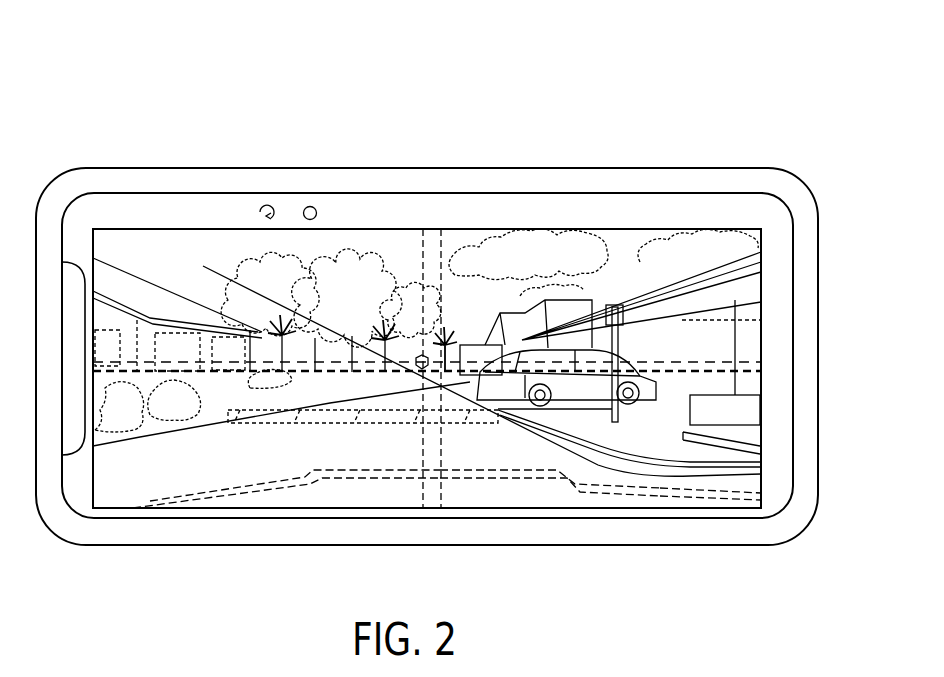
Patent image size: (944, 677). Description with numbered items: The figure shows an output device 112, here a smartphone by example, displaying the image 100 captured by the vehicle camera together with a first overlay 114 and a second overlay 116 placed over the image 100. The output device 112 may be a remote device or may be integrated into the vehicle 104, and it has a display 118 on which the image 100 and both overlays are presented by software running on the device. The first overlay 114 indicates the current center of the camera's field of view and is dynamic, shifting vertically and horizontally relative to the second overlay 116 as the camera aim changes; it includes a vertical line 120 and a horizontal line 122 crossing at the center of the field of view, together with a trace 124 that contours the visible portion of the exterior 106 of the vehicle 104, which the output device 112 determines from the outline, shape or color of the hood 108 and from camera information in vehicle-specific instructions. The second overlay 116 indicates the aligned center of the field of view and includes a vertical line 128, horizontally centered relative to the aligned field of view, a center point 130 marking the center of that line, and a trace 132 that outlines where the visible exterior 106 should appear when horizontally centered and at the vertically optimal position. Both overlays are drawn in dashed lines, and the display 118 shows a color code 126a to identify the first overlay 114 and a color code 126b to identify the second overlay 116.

The image 100 is at (535, 229).
The vehicle 104 is at (600, 505).
The exterior of the vehicle 106 is at (657, 505).
The hood 108 is at (535, 500).
The output device 112 is at (240, 168).
The first overlay 114 is at (441, 248).
The second overlay 116 is at (420, 250).
The display 118 is at (748, 193).
The vertical line 120 is at (445, 275).
The horizontal line 122 is at (735, 375).
The trace 124 is at (761, 497).
The color code 126a is at (267, 206).
The color code 126b is at (308, 206).
The vertical line 128 is at (423, 243).
The center point 130 is at (427, 361).
The trace 132 is at (250, 492).